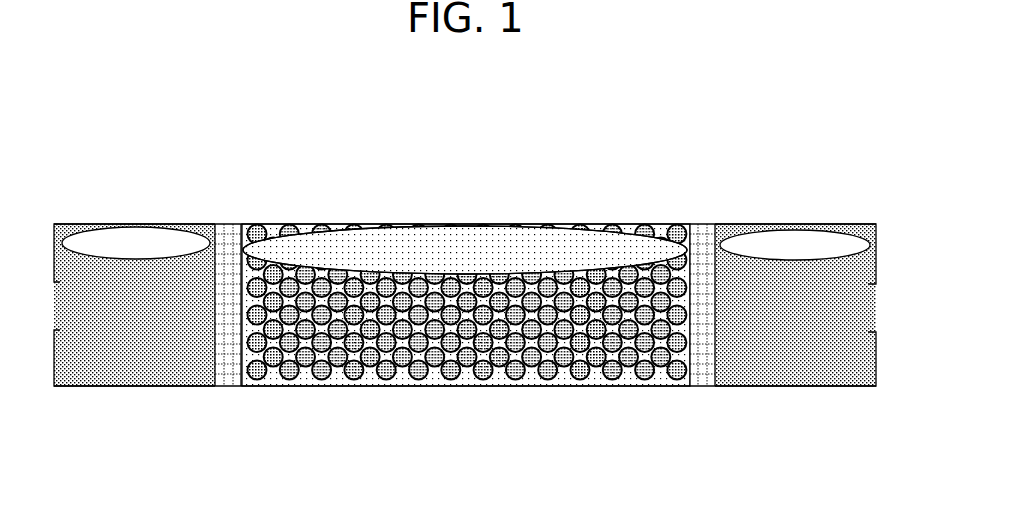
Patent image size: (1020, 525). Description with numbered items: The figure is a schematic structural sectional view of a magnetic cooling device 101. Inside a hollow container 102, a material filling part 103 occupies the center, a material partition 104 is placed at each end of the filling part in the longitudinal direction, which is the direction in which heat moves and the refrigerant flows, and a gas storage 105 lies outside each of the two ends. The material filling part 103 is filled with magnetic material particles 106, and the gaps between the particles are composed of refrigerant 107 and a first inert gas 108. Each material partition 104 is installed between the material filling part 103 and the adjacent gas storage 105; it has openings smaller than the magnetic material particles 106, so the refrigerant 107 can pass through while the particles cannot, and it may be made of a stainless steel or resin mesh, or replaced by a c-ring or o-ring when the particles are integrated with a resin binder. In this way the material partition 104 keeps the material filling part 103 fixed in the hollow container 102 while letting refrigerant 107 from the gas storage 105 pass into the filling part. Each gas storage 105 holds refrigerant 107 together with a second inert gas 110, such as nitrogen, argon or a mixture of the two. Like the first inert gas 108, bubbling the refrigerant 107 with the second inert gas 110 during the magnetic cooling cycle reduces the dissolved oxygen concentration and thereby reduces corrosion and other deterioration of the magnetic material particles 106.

The magnetic cooling device 101 is at (361, 160).
The hollow container 102 is at (866, 224).
The material filling part 103 is at (466, 307).
The material partition 104 is at (224, 376).
The gas storage 105 is at (173, 402).
The magnetic material particles 106 is at (615, 375).
The refrigerant 107 is at (77, 368).
The first inert gas 108 is at (516, 246).
The second inert gas 110 is at (152, 240).